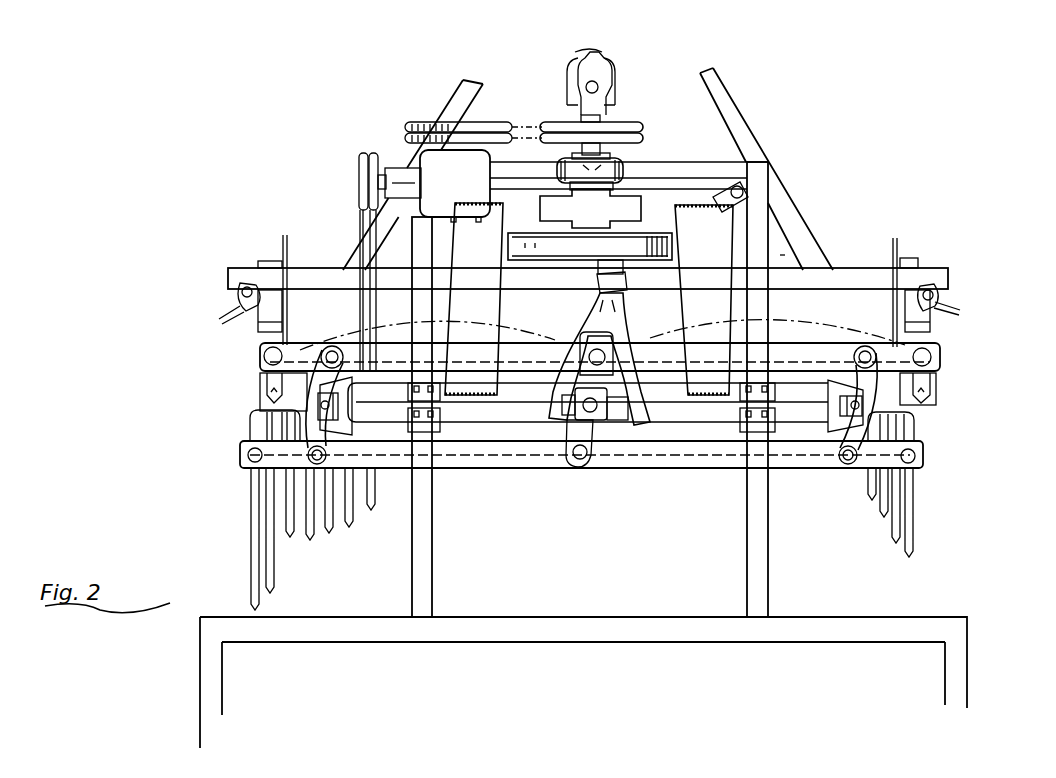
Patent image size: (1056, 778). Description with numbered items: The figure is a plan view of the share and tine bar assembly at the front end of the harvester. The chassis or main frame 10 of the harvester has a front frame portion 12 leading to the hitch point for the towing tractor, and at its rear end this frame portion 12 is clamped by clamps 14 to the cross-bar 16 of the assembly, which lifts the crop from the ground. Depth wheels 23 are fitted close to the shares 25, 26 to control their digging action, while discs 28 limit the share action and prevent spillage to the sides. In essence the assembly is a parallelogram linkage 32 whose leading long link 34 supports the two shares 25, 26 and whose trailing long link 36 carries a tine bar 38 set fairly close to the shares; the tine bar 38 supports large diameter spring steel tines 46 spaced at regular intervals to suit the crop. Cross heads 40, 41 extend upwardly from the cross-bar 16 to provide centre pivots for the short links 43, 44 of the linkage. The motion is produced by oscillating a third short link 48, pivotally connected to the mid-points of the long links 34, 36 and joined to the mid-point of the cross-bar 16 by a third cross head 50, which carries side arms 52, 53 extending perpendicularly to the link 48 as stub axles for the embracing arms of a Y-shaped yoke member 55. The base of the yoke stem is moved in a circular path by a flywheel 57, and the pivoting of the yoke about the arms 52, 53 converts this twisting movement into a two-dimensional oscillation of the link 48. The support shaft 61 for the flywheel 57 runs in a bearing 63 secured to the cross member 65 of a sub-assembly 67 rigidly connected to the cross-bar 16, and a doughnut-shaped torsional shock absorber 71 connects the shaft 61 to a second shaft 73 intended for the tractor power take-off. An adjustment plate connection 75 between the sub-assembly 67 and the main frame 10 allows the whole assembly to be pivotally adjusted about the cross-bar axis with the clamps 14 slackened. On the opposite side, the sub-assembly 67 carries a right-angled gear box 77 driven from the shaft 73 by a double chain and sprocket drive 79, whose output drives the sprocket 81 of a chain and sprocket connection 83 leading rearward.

The chassis or main frame 10 is at (962, 640).
The frame portion 12 is at (745, 125).
The clamps 14 is at (402, 407).
The cross-bar 16 is at (467, 405).
The depth wheels 23 is at (268, 262).
The share 25 is at (800, 340).
The share 26 is at (395, 332).
The discs 28 is at (287, 240).
The parallelogram linkage 32 is at (700, 478).
The leading long link 34 is at (930, 455).
The trailing long link 36 is at (935, 357).
The tine bar 38 is at (915, 425).
The cross head 40 is at (840, 432).
The cross head 41 is at (338, 405).
The short link 43 is at (848, 355).
The short link 44 is at (318, 443).
The tines 46 is at (915, 510).
The third short link 48 is at (590, 375).
The third cross head 50 is at (590, 412).
The side arm 52 is at (618, 403).
The side arm 53 is at (566, 400).
The Y-shaped yoke member 55 is at (625, 333).
The flywheel 57 is at (655, 250).
The support shaft 61 is at (595, 236).
The bearing 63 is at (548, 212).
The cross member 65 is at (660, 210).
The sub-assembly 67 is at (777, 255).
The torsional shock absorber 71 is at (627, 172).
The second shaft 73 is at (598, 100).
The adjustment plate connection 75 is at (722, 190).
The right-angled gear box 77 is at (472, 195).
The double chain and sprocket drive 79 is at (523, 126).
The sprocket 81 is at (357, 175).
The chain and sprocket connection 83 is at (360, 225).